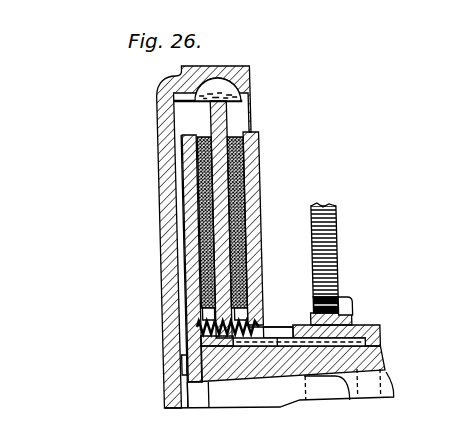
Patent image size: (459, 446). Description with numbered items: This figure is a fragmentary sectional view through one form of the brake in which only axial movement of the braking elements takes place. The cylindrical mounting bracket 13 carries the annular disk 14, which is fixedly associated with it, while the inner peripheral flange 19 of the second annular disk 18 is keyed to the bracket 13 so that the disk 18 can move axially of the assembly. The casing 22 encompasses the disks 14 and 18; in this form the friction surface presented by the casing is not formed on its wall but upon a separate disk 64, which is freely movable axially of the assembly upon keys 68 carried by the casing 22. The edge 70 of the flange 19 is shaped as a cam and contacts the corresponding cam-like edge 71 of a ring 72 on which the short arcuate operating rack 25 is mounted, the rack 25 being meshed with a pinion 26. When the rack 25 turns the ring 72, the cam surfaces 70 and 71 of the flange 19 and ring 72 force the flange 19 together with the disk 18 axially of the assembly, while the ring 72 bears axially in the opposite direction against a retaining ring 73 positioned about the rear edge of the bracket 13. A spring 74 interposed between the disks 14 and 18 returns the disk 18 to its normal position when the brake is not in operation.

The mounting bracket 13 is at (382, 387).
The annular disk 14 is at (188, 240).
The annular disk 18 is at (251, 238).
The inner peripheral flange 19 is at (288, 327).
The casing 22 is at (168, 109).
The arcuate rack 25 is at (341, 300).
The pinion 26 is at (338, 232).
The disk 64 is at (196, 205).
The key 68 is at (244, 92).
The cam edge of flange 70 is at (302, 325).
The cam-like edge of ring 71 is at (288, 330).
The ring 72 is at (351, 317).
The retaining ring 73 is at (378, 327).
The spring 74 is at (198, 325).